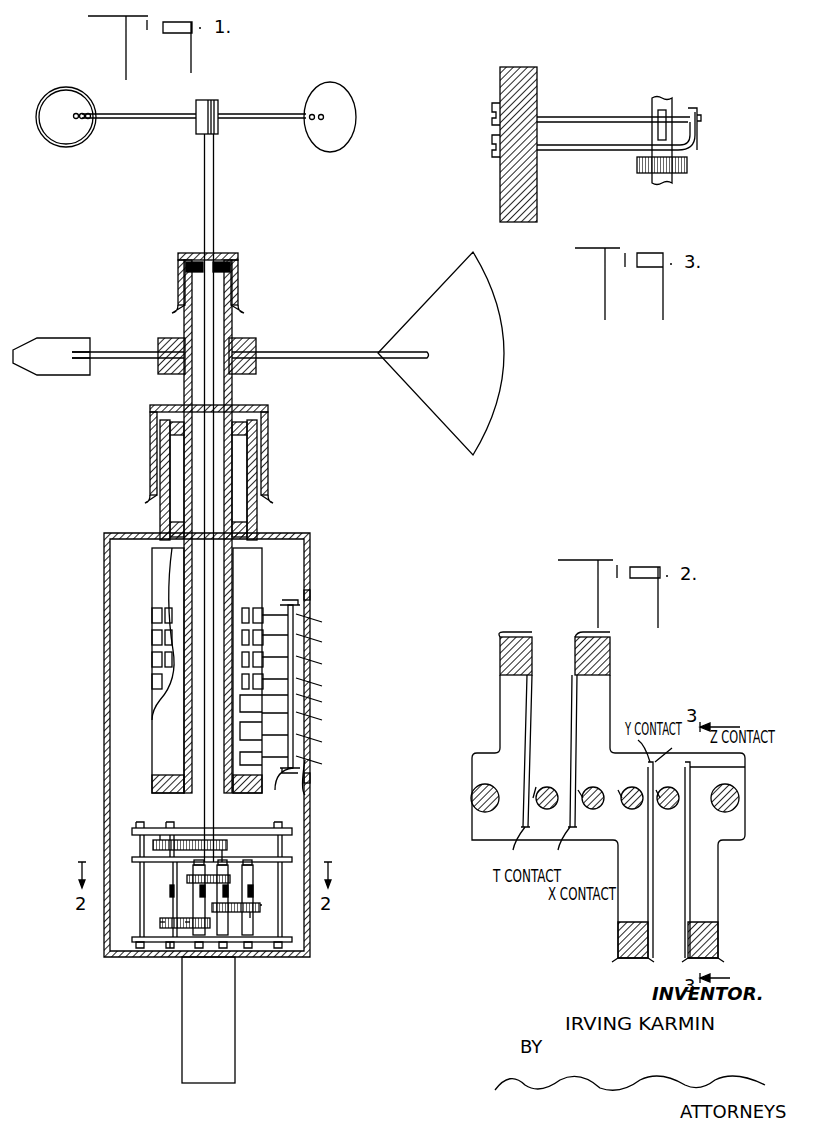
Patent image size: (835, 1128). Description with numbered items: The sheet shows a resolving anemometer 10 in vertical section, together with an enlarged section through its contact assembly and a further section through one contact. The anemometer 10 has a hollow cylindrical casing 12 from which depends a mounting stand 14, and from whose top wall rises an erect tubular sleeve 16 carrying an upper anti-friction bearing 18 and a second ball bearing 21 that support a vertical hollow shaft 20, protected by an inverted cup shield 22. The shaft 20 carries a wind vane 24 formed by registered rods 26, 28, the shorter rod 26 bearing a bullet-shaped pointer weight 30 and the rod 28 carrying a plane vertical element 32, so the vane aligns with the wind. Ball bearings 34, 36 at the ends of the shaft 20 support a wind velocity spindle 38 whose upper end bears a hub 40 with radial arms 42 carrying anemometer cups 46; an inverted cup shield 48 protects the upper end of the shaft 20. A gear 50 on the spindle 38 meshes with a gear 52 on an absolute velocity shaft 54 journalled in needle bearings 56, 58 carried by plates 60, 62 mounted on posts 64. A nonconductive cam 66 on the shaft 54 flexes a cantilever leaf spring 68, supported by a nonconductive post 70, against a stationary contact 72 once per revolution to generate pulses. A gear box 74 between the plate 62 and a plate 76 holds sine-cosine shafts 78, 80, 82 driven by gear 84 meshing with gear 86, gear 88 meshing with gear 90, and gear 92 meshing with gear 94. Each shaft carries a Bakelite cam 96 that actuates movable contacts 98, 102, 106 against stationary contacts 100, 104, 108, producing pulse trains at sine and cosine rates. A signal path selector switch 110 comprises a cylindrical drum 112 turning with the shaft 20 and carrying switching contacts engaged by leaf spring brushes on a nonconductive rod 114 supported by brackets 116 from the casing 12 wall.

In FIG. 1, the resolving anemometer 10 is at (418, 643).
In FIG. 1, the hollow cylindrical casing 12 is at (104, 740).
In FIG. 1, the mounting stand 14 is at (182, 1045).
In FIG. 1, the tubular sleeve 16 is at (258, 458).
In FIG. 1, the anti-friction bearing 18 is at (246, 418).
In FIG. 1, the vertical hollow shaft 20 is at (232, 487).
In FIG. 1, the second ball bearing 21 is at (170, 520).
In FIG. 1, the inverted cup shield 22 is at (150, 453).
In FIG. 1, the wind vane 24 is at (325, 320).
In FIG. 1, the rod 26 is at (122, 350).
In FIG. 1, the rod 28 is at (348, 350).
In FIG. 1, the pointer weight 30 is at (44, 340).
In FIG. 1, the plane vertical element 32 is at (432, 296).
In FIG. 1, the ball bearing 34 is at (220, 258).
In FIG. 1, the ball bearing 36 is at (216, 798).
In FIG. 1, the wind velocity spindle 38 is at (215, 180).
In FIG. 1, the hub 40 is at (218, 108).
In FIG. 1, the radial arms 42 is at (172, 116).
In FIG. 1, the anemometer cup 46 is at (350, 97).
In FIG. 1, the inverted cup shield 48 is at (233, 278).
In FIG. 1, the gear 50 is at (224, 842).
In FIG. 1, the gear 52 is at (158, 835).
In FIG. 1, the absolute velocity shaft 54 is at (173, 907).
In FIG. 2, the absolute velocity shaft 54 is at (547, 787).
In FIG. 1, the needle bearing 56 is at (177, 840).
In FIG. 1, the needle bearing 58 is at (173, 947).
In FIG. 1, the plate 60 is at (295, 825).
In FIG. 1, the plate 62 is at (292, 940).
In FIG. 2, the posts 64 is at (752, 800).
In FIG. 1, the cam 66 is at (168, 888).
In FIG. 2, the cam 66 is at (536, 808).
In FIG. 2, the cantilever leaf spring 68 is at (532, 748).
In FIG. 3, the electrically nonconductive post 70 is at (535, 85).
In FIG. 2, the electrically nonconductive post 70 is at (500, 663).
In FIG. 2, the stationary contact 72 is at (510, 848).
In FIG. 1, the gear box 74 is at (272, 911).
In FIG. 1, the plate 76 is at (132, 856).
In FIG. 1, the first sine-cosine shaft 78 is at (175, 905).
In FIG. 2, the first sine-cosine shaft 78 is at (593, 809).
In FIG. 1, the second sine-cosine shaft 80 is at (220, 933).
In FIG. 2, the second sine-cosine shaft 80 is at (632, 809).
In FIG. 1, the third sine-cosine shaft 82 is at (247, 930).
In FIG. 3, the third sine-cosine shaft 82 is at (672, 100).
In FIG. 2, the third sine-cosine shaft 82 is at (668, 809).
In FIG. 1, the gear 84 is at (167, 923).
In FIG. 1, the gear 86 is at (188, 925).
In FIG. 1, the gear 88 is at (187, 878).
In FIG. 1, the gear 90 is at (262, 887).
In FIG. 1, the gear 92 is at (227, 913).
In FIG. 1, the gear 94 is at (253, 917).
In FIG. 3, the gear 94 is at (687, 172).
In FIG. 1, the Bakelite cam 96 is at (255, 888).
In FIG. 2, the Bakelite cam 96 is at (680, 796).
In FIG. 2, the movable contact 98 is at (578, 748).
In FIG. 2, the stationary contact 100 is at (557, 849).
In FIG. 2, the movable contact 102 is at (647, 872).
In FIG. 2, the stationary contact 104 is at (664, 746).
In FIG. 3, the movable contact 106 is at (623, 115).
In FIG. 2, the movable contact 106 is at (690, 880).
In FIG. 3, the stationary contact 108 is at (697, 130).
In FIG. 2, the stationary contact 108 is at (736, 761).
In FIG. 1, the signal path selector switch 110 is at (277, 577).
In FIG. 1, the cylindrical drum 112 is at (150, 586).
In FIG. 1, the rod 114 is at (287, 789).
In FIG. 1, the brackets 116 is at (310, 798).